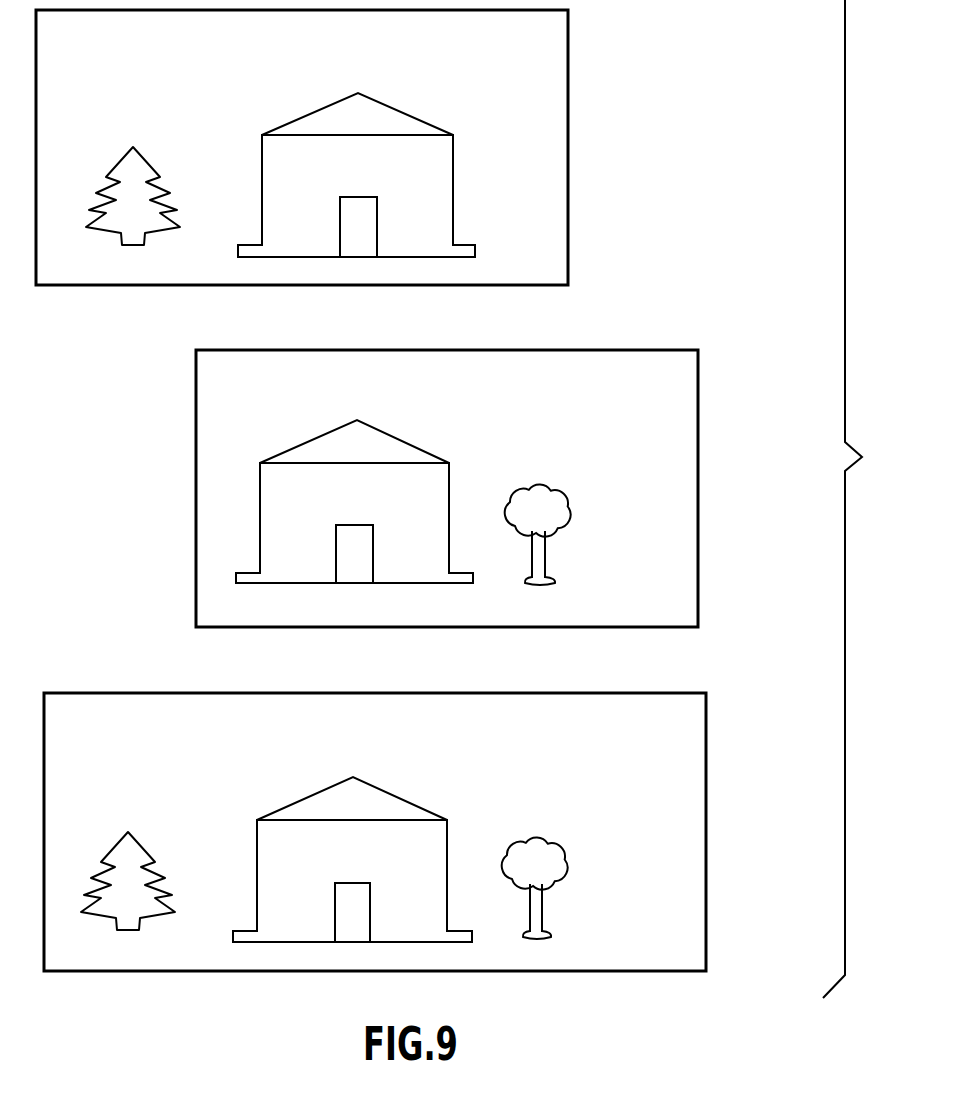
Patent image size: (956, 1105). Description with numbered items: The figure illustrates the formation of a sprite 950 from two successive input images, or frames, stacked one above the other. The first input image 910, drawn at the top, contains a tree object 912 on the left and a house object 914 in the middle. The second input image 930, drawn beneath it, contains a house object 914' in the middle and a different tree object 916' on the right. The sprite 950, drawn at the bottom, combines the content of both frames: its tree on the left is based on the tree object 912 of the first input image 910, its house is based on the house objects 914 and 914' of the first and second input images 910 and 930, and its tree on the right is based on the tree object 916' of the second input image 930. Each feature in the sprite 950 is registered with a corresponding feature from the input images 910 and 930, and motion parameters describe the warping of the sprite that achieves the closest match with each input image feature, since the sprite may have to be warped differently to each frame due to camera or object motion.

The first input image 910 is at (568, 72).
The tree object 912 is at (143, 163).
The house object 914 is at (364, 165).
The second input image 930 is at (698, 418).
The house object 914' is at (364, 493).
The tree object 916' is at (572, 516).
The sprite 950 is at (706, 762).